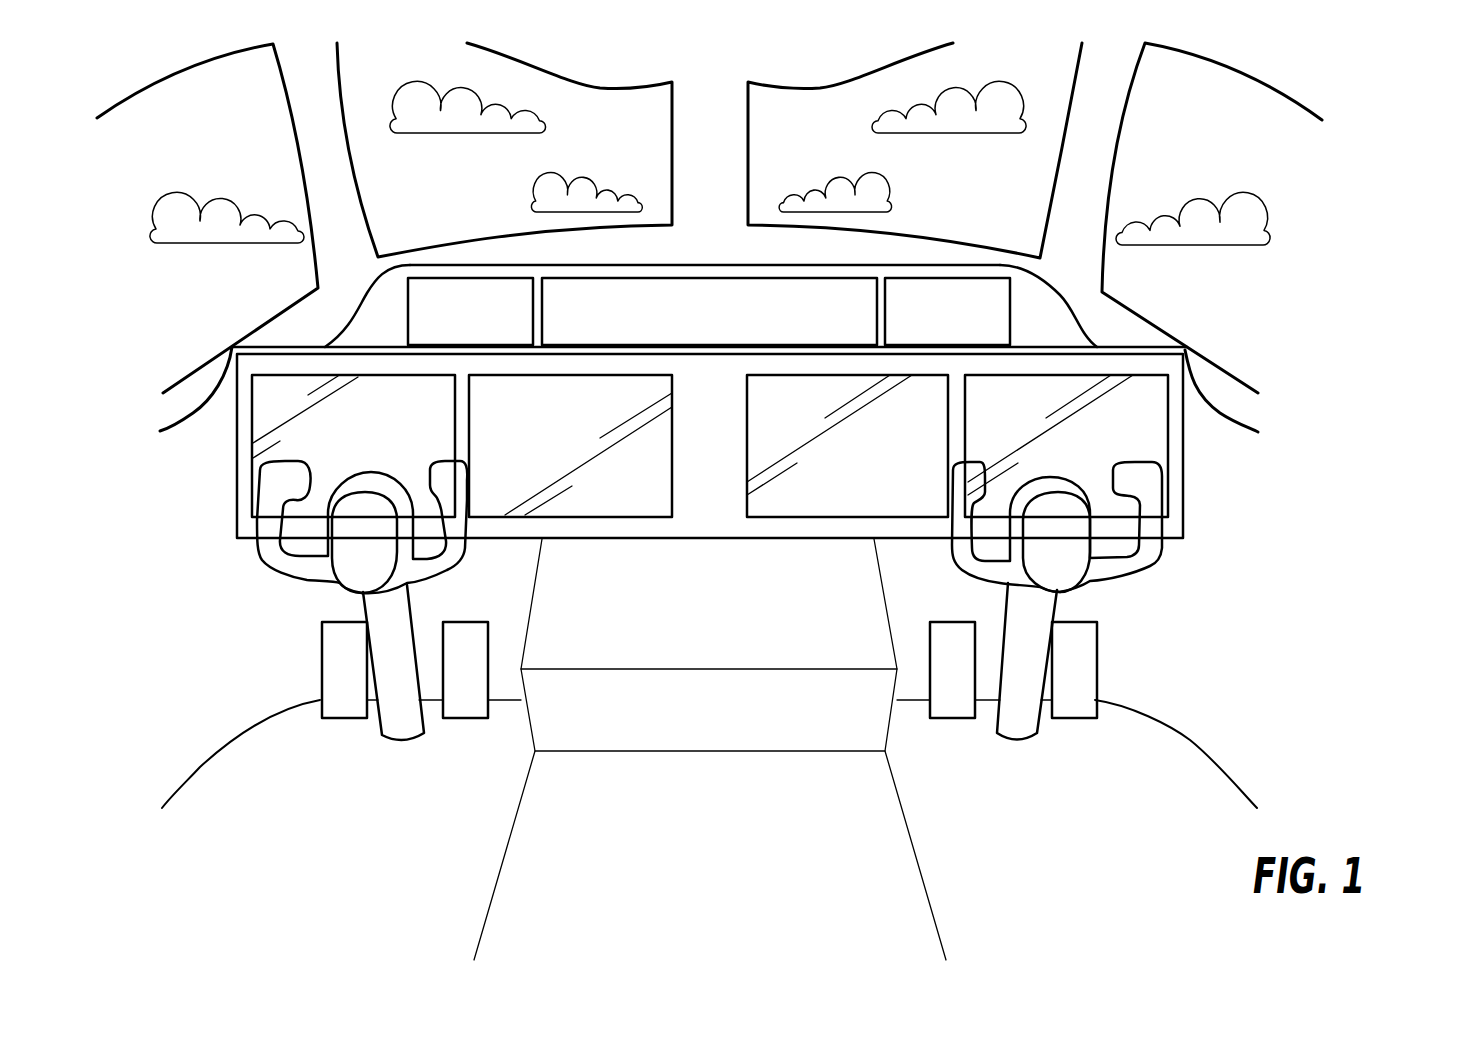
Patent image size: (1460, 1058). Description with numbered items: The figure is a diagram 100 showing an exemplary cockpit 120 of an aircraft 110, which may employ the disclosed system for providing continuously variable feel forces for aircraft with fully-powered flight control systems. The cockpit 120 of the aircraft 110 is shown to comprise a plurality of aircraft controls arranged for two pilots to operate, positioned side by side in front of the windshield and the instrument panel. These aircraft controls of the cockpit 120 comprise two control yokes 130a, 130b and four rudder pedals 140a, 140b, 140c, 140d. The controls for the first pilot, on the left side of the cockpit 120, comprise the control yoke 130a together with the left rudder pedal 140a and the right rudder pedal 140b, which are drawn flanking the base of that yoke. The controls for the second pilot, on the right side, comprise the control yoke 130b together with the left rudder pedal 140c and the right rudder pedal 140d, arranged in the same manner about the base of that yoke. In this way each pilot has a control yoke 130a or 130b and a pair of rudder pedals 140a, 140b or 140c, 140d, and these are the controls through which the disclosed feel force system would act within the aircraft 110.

The diagram 100 is at (1147, 953).
The aircraft 110 is at (1312, 82).
The cockpit 120 is at (1205, 316).
The control yoke 130a is at (262, 563).
The control yoke 130b is at (1153, 562).
The left rudder pedal 140a is at (322, 660).
The right rudder pedal 140b is at (488, 639).
The left rudder pedal 140c is at (930, 648).
The right rudder pedal 140d is at (1097, 669).